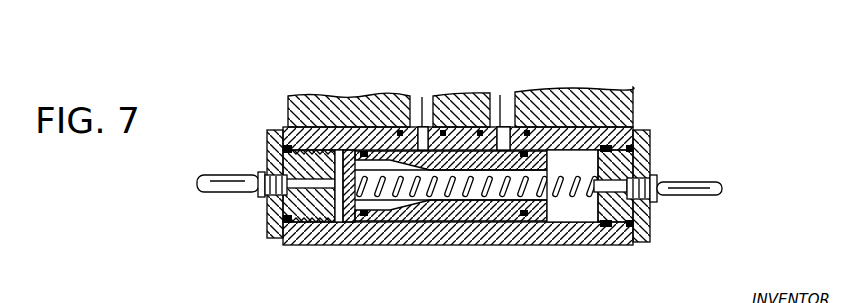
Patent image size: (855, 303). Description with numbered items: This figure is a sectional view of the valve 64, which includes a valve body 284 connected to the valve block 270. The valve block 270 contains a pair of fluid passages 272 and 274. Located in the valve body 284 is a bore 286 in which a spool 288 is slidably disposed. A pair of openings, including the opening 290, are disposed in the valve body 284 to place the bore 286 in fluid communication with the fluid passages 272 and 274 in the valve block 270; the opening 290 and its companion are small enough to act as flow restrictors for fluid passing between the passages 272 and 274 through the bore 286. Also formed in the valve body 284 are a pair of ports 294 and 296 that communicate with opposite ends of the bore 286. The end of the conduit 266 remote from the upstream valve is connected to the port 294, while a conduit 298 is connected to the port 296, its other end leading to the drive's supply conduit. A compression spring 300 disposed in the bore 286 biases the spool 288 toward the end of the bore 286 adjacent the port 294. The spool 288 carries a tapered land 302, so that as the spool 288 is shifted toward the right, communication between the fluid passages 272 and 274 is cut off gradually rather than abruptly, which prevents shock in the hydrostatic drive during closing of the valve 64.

The valve 64 is at (657, 80).
The conduit 266 is at (207, 196).
The valve block 270 is at (289, 112).
The fluid passage 272 is at (509, 96).
The fluid passage 274 is at (422, 98).
The valve body 284 is at (318, 245).
The bore 286 is at (478, 212).
The spool 288 is at (545, 213).
The opening 290 is at (502, 96).
The port 294 is at (261, 198).
The port 296 is at (651, 176).
The conduit 298 is at (698, 182).
The compression spring 300 is at (443, 210).
The tapered land 302 is at (410, 212).